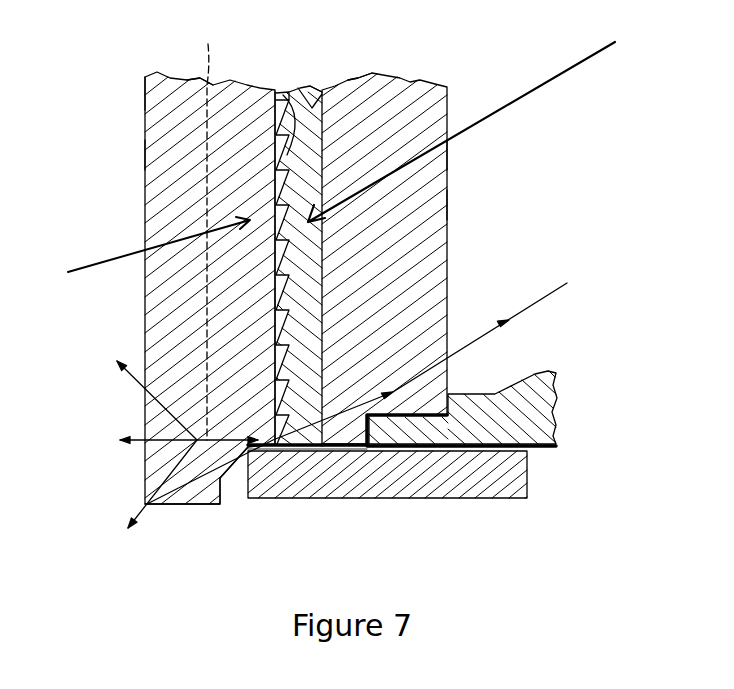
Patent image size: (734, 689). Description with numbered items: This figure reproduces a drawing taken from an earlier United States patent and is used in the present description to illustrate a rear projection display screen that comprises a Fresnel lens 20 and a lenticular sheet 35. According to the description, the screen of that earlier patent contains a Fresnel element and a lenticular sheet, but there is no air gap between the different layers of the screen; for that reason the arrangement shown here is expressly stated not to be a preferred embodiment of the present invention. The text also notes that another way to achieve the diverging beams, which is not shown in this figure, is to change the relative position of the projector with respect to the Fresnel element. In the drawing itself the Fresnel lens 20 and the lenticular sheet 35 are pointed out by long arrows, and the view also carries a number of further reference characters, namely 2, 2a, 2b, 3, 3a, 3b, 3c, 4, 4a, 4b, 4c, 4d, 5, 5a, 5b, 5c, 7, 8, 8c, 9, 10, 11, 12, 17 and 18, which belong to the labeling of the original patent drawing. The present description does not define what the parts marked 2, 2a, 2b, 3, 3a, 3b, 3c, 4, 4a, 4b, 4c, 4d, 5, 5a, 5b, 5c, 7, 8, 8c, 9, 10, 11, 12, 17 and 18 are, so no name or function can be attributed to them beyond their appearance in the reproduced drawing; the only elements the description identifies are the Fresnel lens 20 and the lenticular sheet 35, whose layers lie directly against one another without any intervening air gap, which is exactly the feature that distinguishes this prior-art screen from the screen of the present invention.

The joined body 2 is at (472, 52).
The side surface of joined body 2a is at (448, 200).
The side surface of joined body 2b is at (145, 152).
The first member 3 is at (157, 75).
The joining surface of first member 3a is at (273, 110).
The upper surface of first member 3b is at (143, 100).
The lower portion of first member 3c is at (188, 505).
The joining layer 4 is at (296, 95).
The upper end of joining layer 4a is at (312, 90).
The serrated interface 4b is at (288, 132).
The lower end of joining layer 4c is at (298, 447).
The top portion of joining layer 4d is at (293, 105).
The second member 5 is at (408, 98).
The side surface of second member 5a is at (448, 152).
The upper surface of second member 5b is at (362, 77).
The lower surface layer of second member 5c is at (348, 448).
The holding member 7 is at (486, 452).
The step portion of holding member 8 is at (410, 432).
The lower surface of holding member 8c is at (488, 444).
The gap 9 is at (273, 475).
The center line 10 is at (203, 231).
The upper surface 11 is at (205, 100).
The base plate 12 is at (400, 487).
The irradiation direction 17 is at (565, 282).
The reference direction 18 is at (147, 506).
The Fresnel lens 20 is at (482, 126).
The lenticular sheet 35 is at (129, 251).